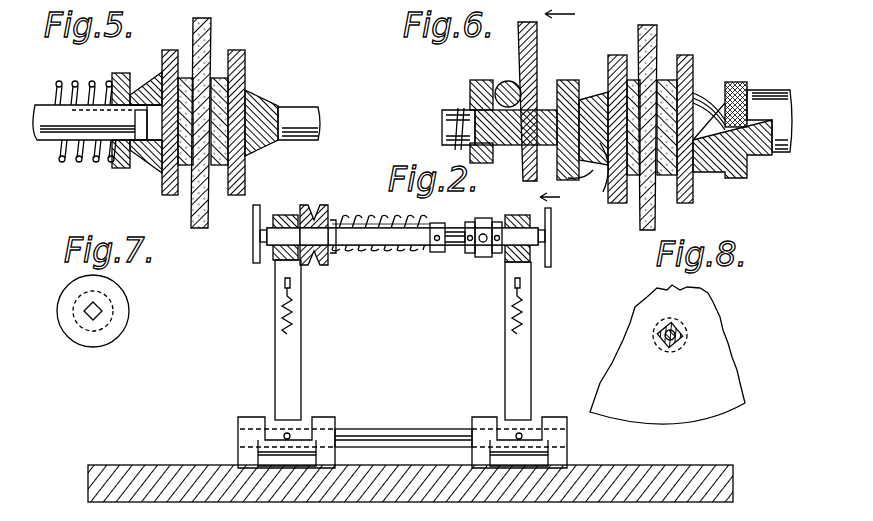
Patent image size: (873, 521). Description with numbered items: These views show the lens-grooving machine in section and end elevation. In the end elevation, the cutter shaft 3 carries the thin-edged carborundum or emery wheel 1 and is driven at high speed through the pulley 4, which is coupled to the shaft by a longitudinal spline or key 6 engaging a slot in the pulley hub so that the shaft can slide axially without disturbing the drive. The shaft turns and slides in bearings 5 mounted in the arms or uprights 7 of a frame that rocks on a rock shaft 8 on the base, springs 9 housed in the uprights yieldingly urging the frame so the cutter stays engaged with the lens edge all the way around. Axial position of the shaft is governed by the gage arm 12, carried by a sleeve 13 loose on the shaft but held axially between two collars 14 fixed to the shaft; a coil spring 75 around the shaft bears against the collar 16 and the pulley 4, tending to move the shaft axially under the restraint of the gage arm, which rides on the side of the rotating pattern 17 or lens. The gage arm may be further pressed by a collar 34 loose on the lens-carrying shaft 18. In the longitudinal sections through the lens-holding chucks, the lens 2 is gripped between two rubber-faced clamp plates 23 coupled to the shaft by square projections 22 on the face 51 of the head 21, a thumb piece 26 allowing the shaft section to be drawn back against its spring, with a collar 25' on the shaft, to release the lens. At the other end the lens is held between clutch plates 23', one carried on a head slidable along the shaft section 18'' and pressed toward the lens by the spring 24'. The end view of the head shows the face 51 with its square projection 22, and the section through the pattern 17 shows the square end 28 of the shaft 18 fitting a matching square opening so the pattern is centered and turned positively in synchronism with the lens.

In FIG. 2, the carborundum or emery wheel 1 is at (254, 260).
In FIG. 5, the lens 2 is at (207, 46).
In FIG. 6, the lens 2 is at (638, 34).
In FIG. 2, the cutter shaft 3 is at (392, 262).
In FIG. 2, the pulley 4 is at (309, 208).
In FIG. 2, the bearings 5 is at (280, 216).
In FIG. 2, the spline or key 6 is at (332, 228).
In FIG. 2, the arms or uprights 7 is at (299, 343).
In FIG. 6, the rock shaft 8 is at (563, 104).
In FIG. 2, the rock shaft 8 is at (410, 430).
In FIG. 2, the springs 9 is at (272, 326).
In FIG. 2, the gage arm 12 is at (482, 229).
In FIG. 2, the sleeve 13 is at (489, 220).
In FIG. 2, the collars 14 is at (468, 256).
In FIG. 2, the collar 16 is at (436, 254).
In FIG. 6, the pattern 17 is at (538, 30).
In FIG. 8, the pattern 17 is at (667, 354).
In FIG. 6, the shaft 18 is at (597, 113).
In FIG. 5, the shaft 18'' is at (82, 97).
In FIG. 5, the head 21 is at (148, 172).
In FIG. 6, the head 21 is at (600, 96).
In FIG. 6, the square projection 22 is at (603, 130).
In FIG. 7, the square projection 22 is at (100, 314).
In FIG. 6, the clamp plates 23 is at (658, 121).
In FIG. 5, the clutch plates 23' is at (220, 110).
In FIG. 5, the spring 24' is at (95, 107).
In FIG. 6, the spring 25' is at (588, 171).
In FIG. 6, the thumb piece 26 is at (568, 95).
In FIG. 8, the square end of shaft 28 is at (683, 323).
In FIG. 6, the collar 34 is at (480, 78).
In FIG. 6, the face 51 is at (710, 158).
In FIG. 7, the face 51 is at (118, 294).
In FIG. 2, the spring wire 75 is at (356, 258).